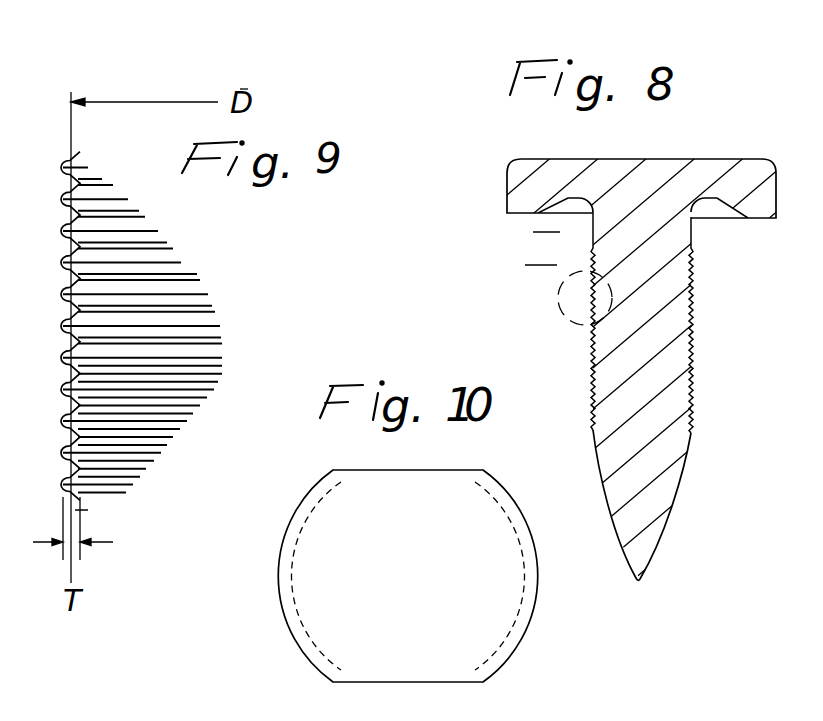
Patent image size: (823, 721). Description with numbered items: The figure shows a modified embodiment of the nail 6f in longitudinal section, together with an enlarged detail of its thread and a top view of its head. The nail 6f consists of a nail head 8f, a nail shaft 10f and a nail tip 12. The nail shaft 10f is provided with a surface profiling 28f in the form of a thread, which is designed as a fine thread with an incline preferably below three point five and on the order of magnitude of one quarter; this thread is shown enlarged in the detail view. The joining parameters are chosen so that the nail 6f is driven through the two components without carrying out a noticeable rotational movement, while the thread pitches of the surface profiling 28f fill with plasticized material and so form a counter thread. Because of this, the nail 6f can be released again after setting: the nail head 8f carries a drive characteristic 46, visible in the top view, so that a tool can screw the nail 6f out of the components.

In FIG. 8, the nail 6f is at (604, 346).
In FIG. 8, the nail head 8f is at (695, 177).
In FIG. 10, the nail head 8f is at (317, 569).
In FIG. 8, the nail shaft 10f is at (666, 353).
In FIG. 9, the nail shaft 10f is at (165, 279).
In FIG. 8, the nail tip 12 is at (653, 503).
In FIG. 8, the surface profiling 28f is at (696, 300).
In FIG. 9, the surface profiling 28f is at (63, 297).
In FIG. 10, the drive characteristic 46 is at (353, 470).